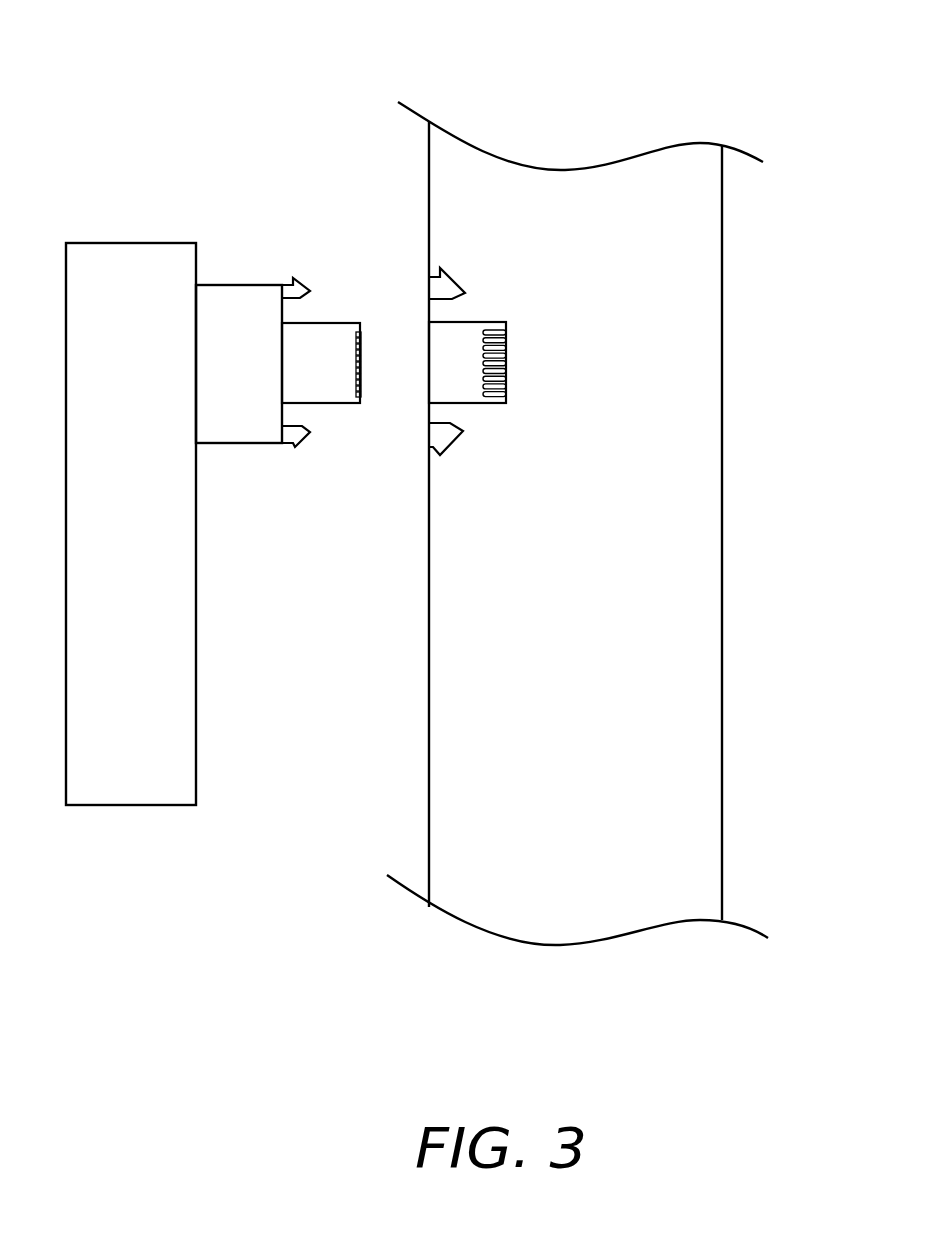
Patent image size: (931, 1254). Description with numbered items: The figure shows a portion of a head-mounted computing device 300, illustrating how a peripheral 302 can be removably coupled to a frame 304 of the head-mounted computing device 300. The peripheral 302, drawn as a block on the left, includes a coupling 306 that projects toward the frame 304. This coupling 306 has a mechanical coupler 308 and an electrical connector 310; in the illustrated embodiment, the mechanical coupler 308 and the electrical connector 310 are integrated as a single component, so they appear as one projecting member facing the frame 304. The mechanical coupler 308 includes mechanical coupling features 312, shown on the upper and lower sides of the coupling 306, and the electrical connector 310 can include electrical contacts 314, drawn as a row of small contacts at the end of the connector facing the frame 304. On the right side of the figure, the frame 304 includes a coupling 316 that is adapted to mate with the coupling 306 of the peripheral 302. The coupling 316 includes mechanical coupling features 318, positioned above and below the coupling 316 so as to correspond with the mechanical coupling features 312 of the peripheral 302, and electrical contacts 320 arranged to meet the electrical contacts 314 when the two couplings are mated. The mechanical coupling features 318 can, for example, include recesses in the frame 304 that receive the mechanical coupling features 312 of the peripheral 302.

The head-mounted computing device 300 is at (587, 66).
The peripheral 302 is at (157, 514).
The frame 304 is at (608, 514).
The coupling 306 is at (248, 264).
The mechanical coupler 308 is at (328, 440).
The electrical connector 310 is at (447, 401).
The mechanical coupling features 312 is at (302, 285).
The electrical contacts 314 is at (361, 384).
The coupling 316 is at (520, 417).
The mechanical coupling features 318 is at (452, 282).
The electrical contacts 320 is at (506, 372).